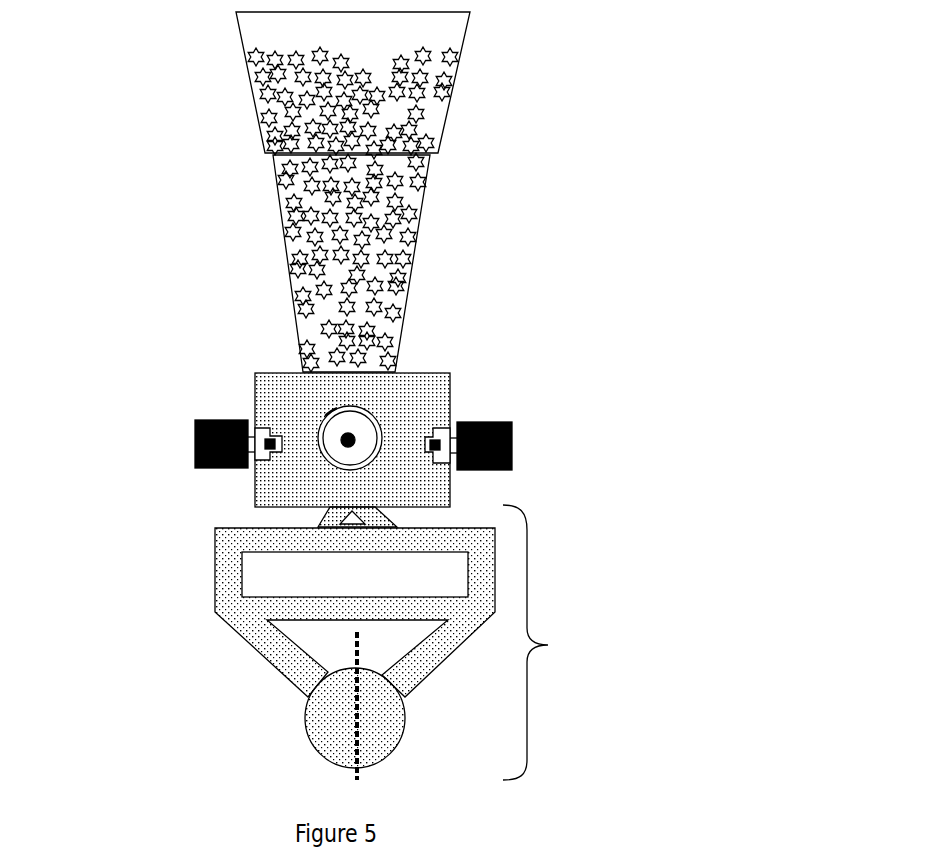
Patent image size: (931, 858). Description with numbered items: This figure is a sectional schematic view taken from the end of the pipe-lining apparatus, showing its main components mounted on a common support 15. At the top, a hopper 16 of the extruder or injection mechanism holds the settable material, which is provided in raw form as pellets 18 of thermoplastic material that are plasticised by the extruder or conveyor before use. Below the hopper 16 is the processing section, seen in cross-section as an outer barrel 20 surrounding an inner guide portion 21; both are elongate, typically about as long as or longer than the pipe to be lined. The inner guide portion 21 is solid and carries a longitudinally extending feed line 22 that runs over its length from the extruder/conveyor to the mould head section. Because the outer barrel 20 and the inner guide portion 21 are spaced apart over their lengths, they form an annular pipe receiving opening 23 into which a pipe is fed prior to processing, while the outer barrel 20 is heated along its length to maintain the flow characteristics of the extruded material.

The common support 15 is at (192, 440).
The hopper 16 is at (447, 115).
The pellets 18 is at (275, 97).
The outer barrel 20 is at (290, 377).
The inner guide portion 21 is at (300, 414).
The feed line 22 is at (337, 442).
The annular pipe receiving opening 23 is at (378, 415).